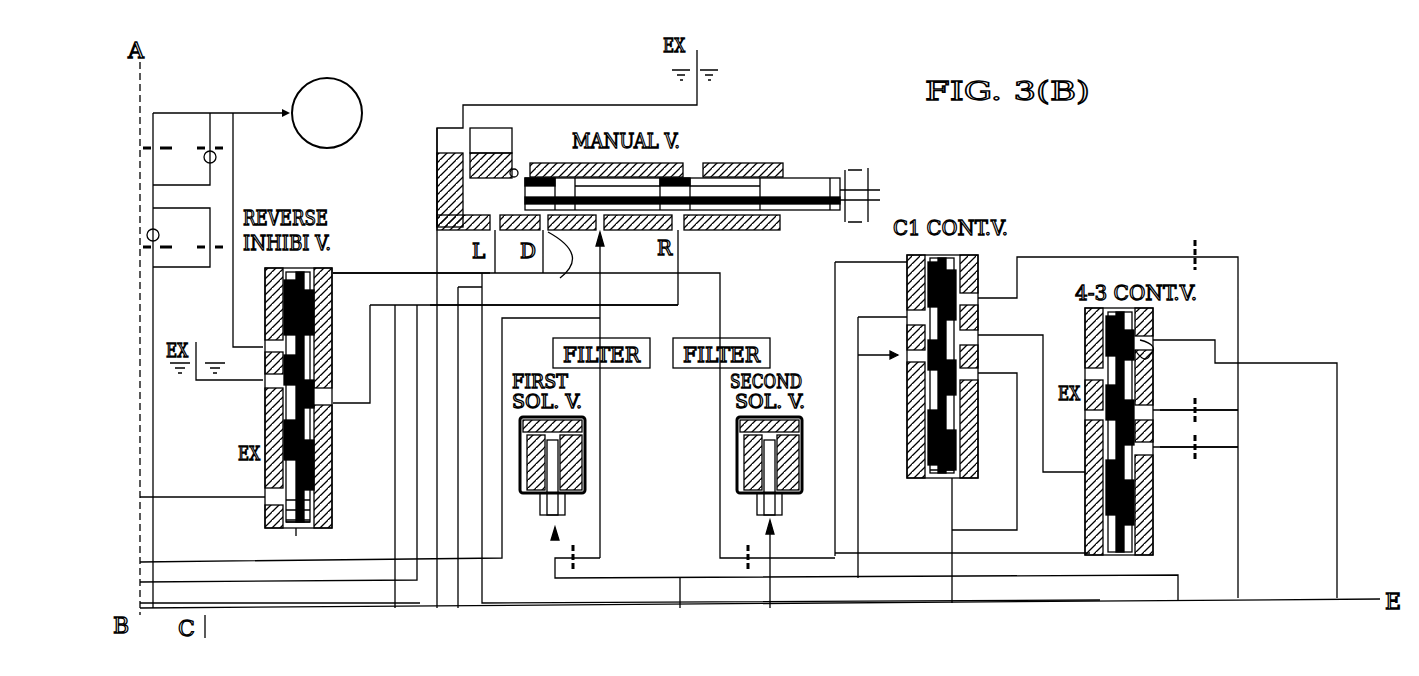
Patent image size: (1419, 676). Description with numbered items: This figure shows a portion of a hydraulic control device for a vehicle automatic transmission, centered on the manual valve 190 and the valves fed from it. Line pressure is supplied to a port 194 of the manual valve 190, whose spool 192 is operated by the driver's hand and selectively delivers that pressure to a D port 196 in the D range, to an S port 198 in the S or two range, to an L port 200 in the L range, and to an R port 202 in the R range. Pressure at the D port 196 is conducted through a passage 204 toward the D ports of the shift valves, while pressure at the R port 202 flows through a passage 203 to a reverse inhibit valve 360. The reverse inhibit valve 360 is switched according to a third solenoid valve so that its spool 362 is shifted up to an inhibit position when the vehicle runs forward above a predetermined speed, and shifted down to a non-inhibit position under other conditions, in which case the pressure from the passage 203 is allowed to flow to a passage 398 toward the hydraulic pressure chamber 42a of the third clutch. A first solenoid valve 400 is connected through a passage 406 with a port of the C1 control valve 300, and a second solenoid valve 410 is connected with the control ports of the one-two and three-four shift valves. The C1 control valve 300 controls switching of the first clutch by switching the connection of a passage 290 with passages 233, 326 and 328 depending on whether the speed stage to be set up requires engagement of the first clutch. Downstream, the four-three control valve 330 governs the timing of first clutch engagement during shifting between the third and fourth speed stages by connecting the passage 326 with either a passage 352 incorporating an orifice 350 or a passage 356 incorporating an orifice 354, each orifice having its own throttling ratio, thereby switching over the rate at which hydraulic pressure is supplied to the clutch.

The hydraulic pressure chamber of the third clutch 42a is at (345, 128).
The passage 398 is at (155, 306).
The L port 200 is at (485, 226).
The S port 198 is at (518, 166).
The manual valve 190 is at (802, 172).
The port 194 is at (627, 395).
The R port 202 is at (688, 228).
The spool 192 is at (868, 280).
The D port 196 is at (554, 293).
The passage 203 is at (722, 285).
The passage 406 is at (907, 300).
The passage 326 is at (1043, 356).
The passage 328 is at (1240, 290).
The spool 362 is at (332, 440).
The passage 204 is at (437, 490).
The reverse inhibit valve 360 is at (312, 532).
The first solenoid valve 400 is at (527, 508).
The second solenoid valve 410 is at (790, 500).
The passage 290 is at (858, 502).
The C1 control valve 300 is at (946, 486).
The passage 233 is at (1017, 473).
The orifice 350 is at (1207, 405).
The passage 352 is at (1217, 411).
The passage 356 is at (1238, 447).
The orifice 354 is at (1205, 455).
The 4-3 control valve 330 is at (1160, 507).